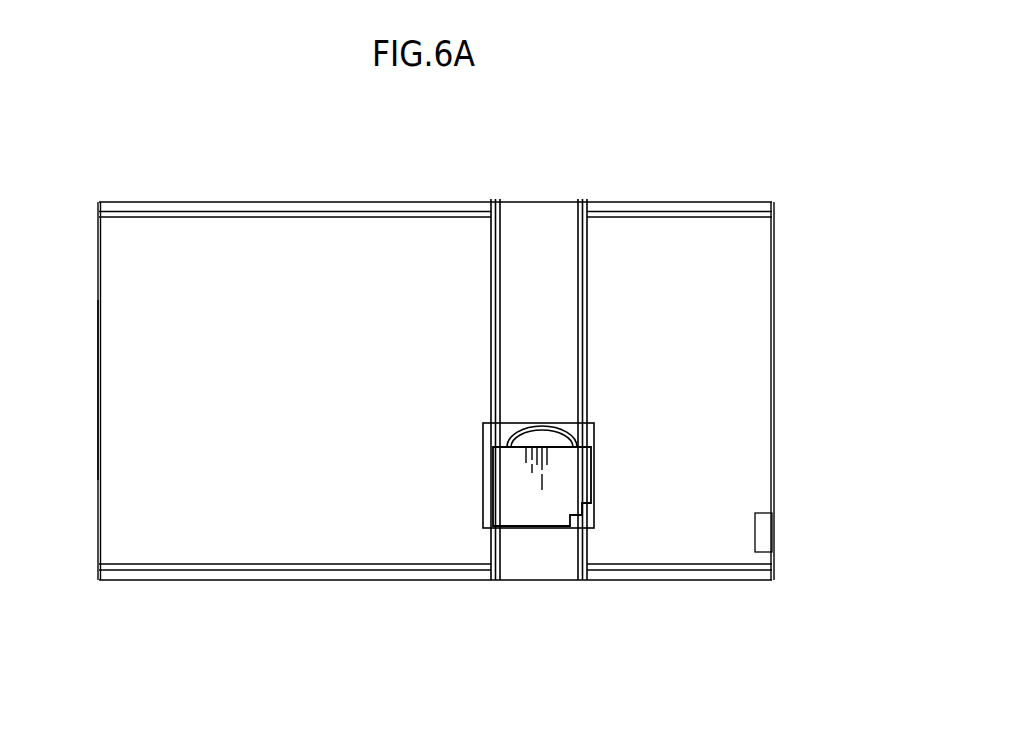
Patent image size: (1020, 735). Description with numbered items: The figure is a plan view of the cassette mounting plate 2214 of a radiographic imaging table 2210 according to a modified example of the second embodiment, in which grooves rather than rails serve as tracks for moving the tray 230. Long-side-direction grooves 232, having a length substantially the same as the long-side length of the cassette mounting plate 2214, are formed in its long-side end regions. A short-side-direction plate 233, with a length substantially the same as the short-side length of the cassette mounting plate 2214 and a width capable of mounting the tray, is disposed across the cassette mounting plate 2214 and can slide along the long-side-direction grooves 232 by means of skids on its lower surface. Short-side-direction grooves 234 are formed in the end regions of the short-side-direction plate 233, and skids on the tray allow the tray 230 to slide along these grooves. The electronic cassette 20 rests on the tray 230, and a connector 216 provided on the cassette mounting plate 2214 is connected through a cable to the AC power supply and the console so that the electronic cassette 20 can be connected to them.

The radiographic imaging table 2210 is at (750, 167).
The cassette mounting plate 2214 is at (113, 418).
The long-side-direction grooves 232 is at (203, 217).
The short-side-direction plate 233 is at (567, 340).
The short-side-direction grooves 234 is at (578, 253).
The tray 230 is at (585, 434).
The electronic cassette 20 is at (585, 480).
The connector 216 is at (765, 530).